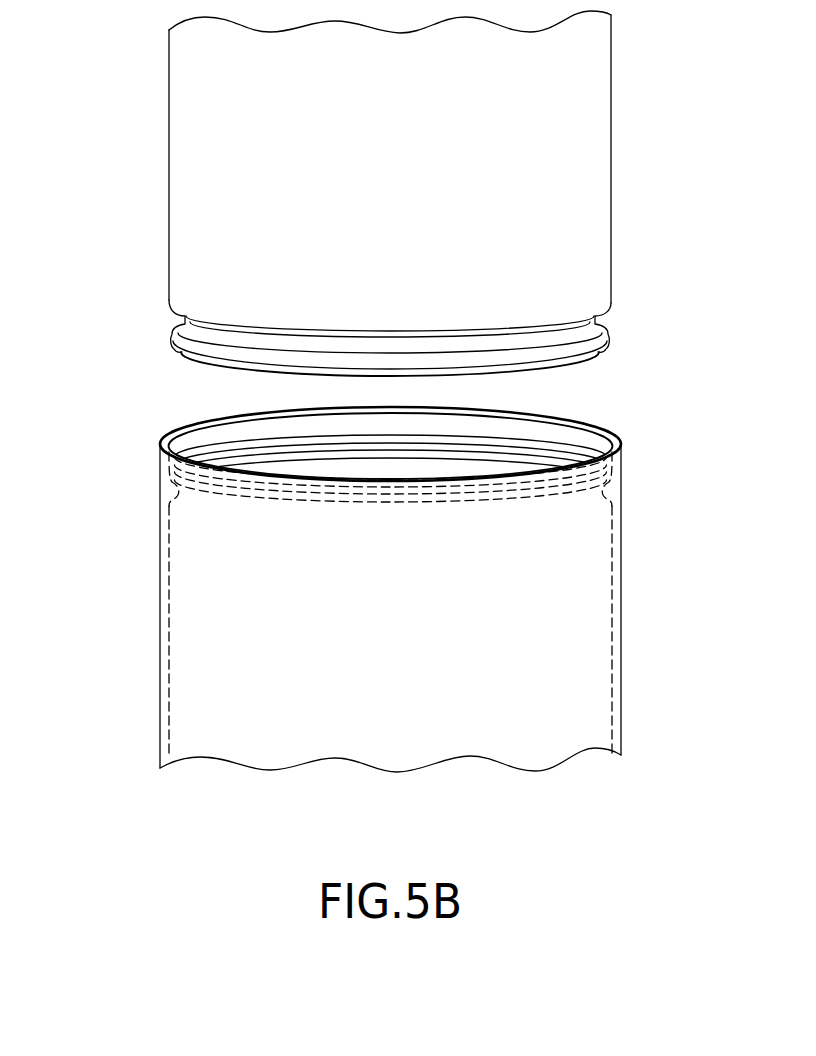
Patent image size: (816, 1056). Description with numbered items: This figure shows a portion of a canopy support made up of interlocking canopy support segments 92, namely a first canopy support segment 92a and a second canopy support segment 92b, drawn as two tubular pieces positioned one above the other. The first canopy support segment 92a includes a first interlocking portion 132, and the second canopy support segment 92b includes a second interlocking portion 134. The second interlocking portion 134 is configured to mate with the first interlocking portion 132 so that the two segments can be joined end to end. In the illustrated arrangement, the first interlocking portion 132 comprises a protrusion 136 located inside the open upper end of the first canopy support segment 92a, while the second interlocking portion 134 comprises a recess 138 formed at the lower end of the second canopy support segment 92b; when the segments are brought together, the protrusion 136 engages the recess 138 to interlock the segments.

The dielectric resonator housing assembly 92 is at (408, 391).
The first canopy support segment 92a is at (378, 589).
The second canopy support segment 92b is at (369, 193).
The first interlocking portion 132 is at (332, 491).
The second interlocking portion 134 is at (327, 323).
The protrusion 136 is at (181, 490).
The recess 138 is at (184, 320).